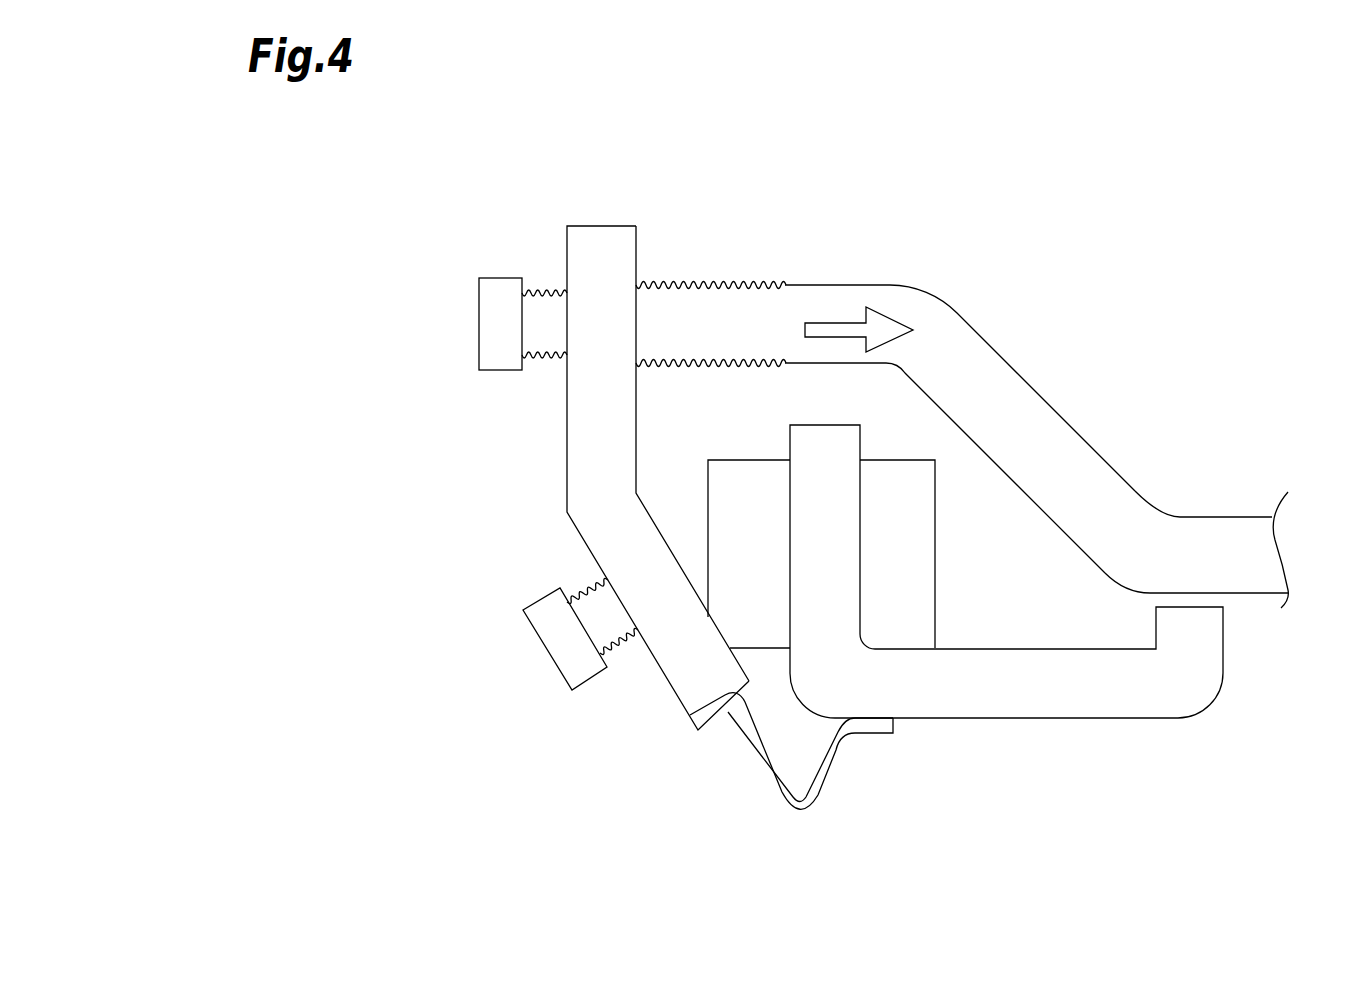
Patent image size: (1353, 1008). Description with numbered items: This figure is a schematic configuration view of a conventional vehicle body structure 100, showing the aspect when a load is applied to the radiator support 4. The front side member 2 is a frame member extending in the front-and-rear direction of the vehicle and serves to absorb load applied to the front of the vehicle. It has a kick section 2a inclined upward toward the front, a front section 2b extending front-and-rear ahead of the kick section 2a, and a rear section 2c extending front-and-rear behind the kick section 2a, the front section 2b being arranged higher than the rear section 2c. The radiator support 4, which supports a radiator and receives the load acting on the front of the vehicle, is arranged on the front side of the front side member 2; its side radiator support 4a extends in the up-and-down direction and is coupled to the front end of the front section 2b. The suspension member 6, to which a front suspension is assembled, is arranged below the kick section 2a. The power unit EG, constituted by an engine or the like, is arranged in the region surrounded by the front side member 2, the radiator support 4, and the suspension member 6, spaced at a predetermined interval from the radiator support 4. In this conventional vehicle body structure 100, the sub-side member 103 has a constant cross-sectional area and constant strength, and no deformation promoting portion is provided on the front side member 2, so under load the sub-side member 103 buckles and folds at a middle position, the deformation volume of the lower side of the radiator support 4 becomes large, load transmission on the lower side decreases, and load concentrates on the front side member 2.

The conventional vehicle body structure 100 is at (394, 200).
The front side member 2 is at (1088, 272).
The kick section 2a is at (1022, 423).
The front section 2b is at (930, 271).
The rear section 2c is at (1270, 500).
The radiator support 4 is at (560, 483).
The side radiator support 4a is at (617, 452).
The suspension member 6 is at (1100, 750).
The sub-side member 103 is at (764, 815).
The power unit EG is at (756, 460).